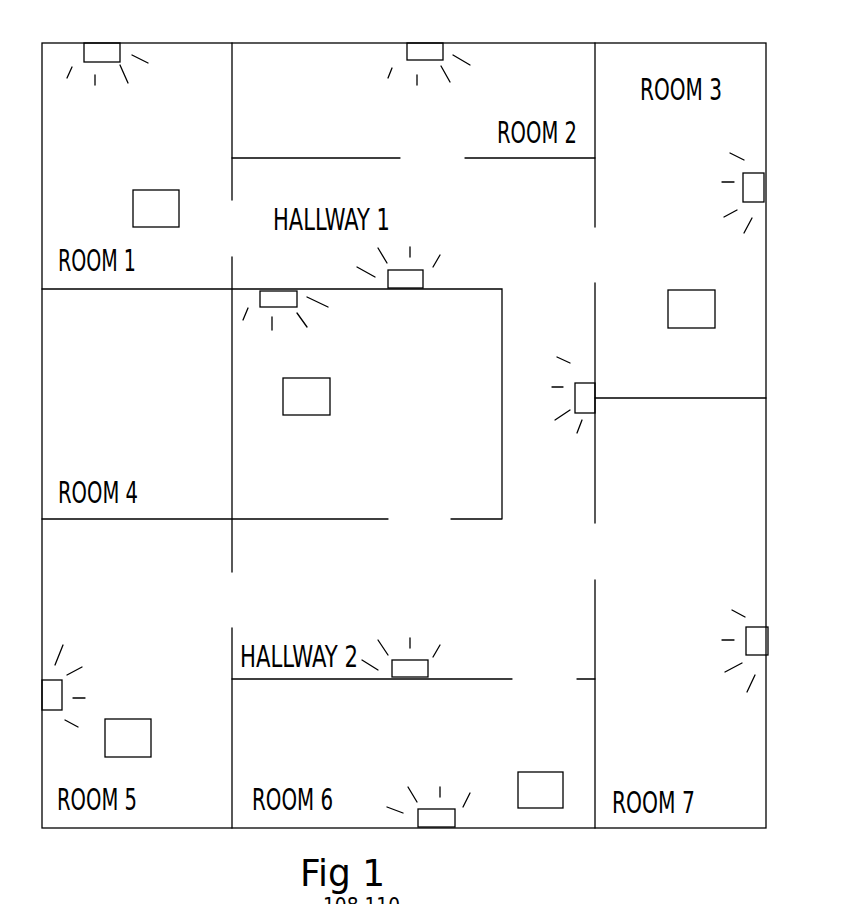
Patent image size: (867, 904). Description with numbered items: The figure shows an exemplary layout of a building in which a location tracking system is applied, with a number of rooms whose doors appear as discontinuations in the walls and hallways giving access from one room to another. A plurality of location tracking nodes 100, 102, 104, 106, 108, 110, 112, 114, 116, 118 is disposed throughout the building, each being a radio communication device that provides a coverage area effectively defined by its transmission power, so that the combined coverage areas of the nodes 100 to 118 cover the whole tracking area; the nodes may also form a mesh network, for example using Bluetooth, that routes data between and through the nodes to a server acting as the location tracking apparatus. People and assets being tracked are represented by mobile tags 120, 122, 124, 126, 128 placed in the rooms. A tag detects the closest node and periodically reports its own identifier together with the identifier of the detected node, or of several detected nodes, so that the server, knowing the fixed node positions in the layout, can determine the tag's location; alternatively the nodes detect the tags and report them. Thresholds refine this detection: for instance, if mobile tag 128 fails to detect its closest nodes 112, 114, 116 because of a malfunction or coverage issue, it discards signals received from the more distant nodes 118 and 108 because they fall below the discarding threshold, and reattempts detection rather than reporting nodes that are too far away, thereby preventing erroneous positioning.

The location tracking node 100 is at (106, 52).
The location tracking node 102 is at (432, 52).
The location tracking node 104 is at (752, 188).
The location tracking node 106 is at (410, 284).
The location tracking node 108 is at (284, 297).
The location tracking node 110 is at (585, 395).
The location tracking node 112 is at (42, 685).
The location tracking node 114 is at (411, 667).
The location tracking node 116 is at (438, 818).
The location tracking node 118 is at (757, 639).
The mobile tag 120 is at (158, 190).
The mobile tag 122 is at (310, 378).
The mobile tag 124 is at (542, 772).
The mobile tag 126 is at (696, 290).
The mobile tag 128 is at (132, 719).